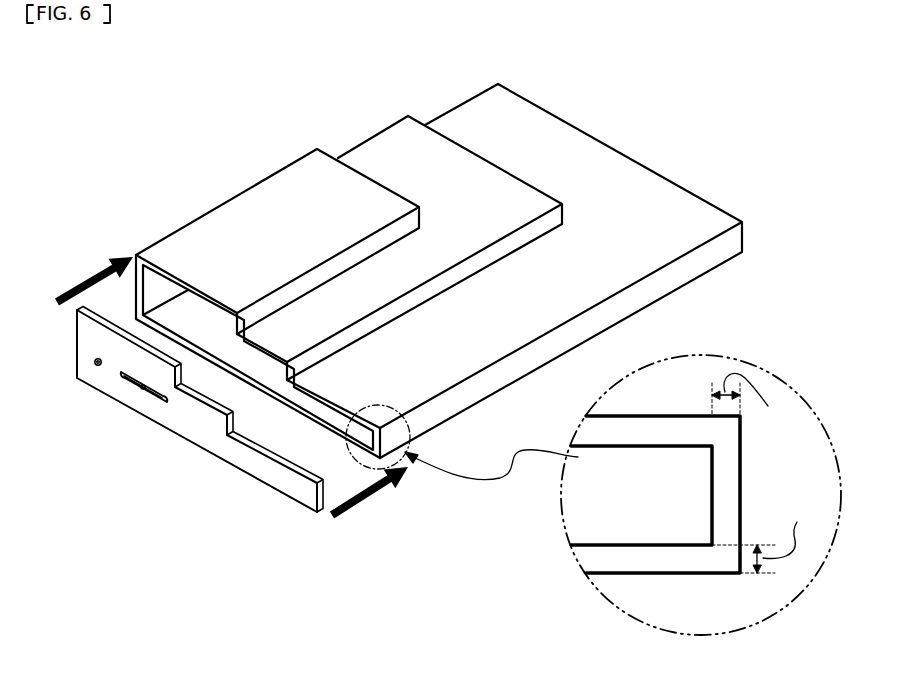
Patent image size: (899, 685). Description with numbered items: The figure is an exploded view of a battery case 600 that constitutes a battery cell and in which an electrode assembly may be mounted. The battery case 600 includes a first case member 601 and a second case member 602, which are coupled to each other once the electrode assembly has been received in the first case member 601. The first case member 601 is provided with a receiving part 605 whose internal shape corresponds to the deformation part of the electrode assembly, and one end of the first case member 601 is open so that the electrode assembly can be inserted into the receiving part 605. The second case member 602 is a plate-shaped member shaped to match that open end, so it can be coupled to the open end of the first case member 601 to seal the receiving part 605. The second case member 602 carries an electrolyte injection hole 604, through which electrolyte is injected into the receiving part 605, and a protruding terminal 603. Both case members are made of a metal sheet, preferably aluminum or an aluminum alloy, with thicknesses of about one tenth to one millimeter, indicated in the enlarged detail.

The battery case 600 is at (84, 117).
The first case member 601 is at (439, 271).
The second case member 602 is at (170, 410).
The protruding terminal 603 is at (134, 390).
The electrolyte injection hole 604 is at (95, 364).
The receiving part 605 is at (203, 320).